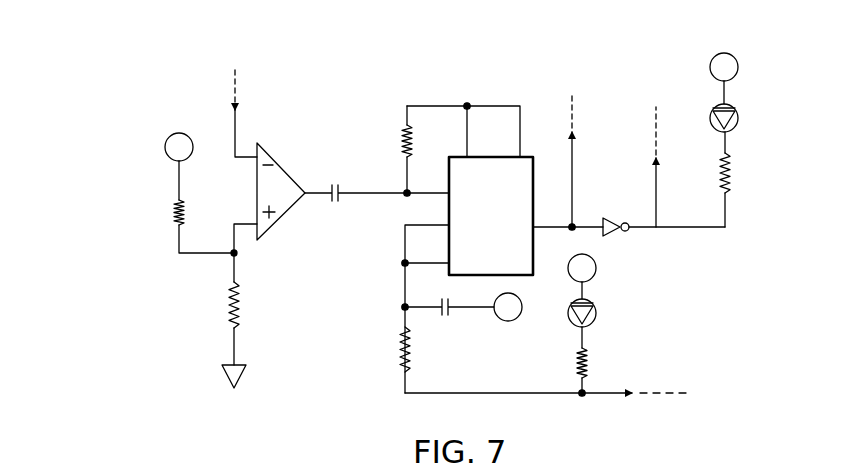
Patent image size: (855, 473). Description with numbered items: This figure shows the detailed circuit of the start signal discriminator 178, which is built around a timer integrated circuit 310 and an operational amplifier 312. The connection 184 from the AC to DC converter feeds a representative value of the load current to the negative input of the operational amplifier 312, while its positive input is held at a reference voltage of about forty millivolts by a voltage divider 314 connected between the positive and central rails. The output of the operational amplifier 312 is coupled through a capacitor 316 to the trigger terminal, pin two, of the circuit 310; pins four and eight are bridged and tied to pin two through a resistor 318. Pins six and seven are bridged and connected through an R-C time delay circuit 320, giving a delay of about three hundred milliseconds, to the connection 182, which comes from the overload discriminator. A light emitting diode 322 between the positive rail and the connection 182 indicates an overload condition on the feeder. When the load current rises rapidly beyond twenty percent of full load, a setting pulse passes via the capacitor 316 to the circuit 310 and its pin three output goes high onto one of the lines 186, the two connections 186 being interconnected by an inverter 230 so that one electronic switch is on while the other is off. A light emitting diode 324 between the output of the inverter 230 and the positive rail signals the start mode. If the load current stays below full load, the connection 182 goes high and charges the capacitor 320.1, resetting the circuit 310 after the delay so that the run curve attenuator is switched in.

The start signal discriminator 178 is at (484, 197).
The connection 182 is at (607, 395).
The connection 184 is at (230, 133).
The connections 186 is at (651, 199).
The inverter 230 is at (618, 234).
The 555N integrated circuit 310 is at (525, 277).
The operational amplifier 312 is at (284, 206).
The voltage divider 314 is at (165, 269).
The capacitor 316 is at (330, 192).
The resistor 318 is at (413, 146).
The R-C time delay circuit 320 is at (392, 318).
The capacitor 320.1 is at (457, 284).
The light emitting diode 322 is at (597, 316).
The light emitting diode 324 is at (736, 121).